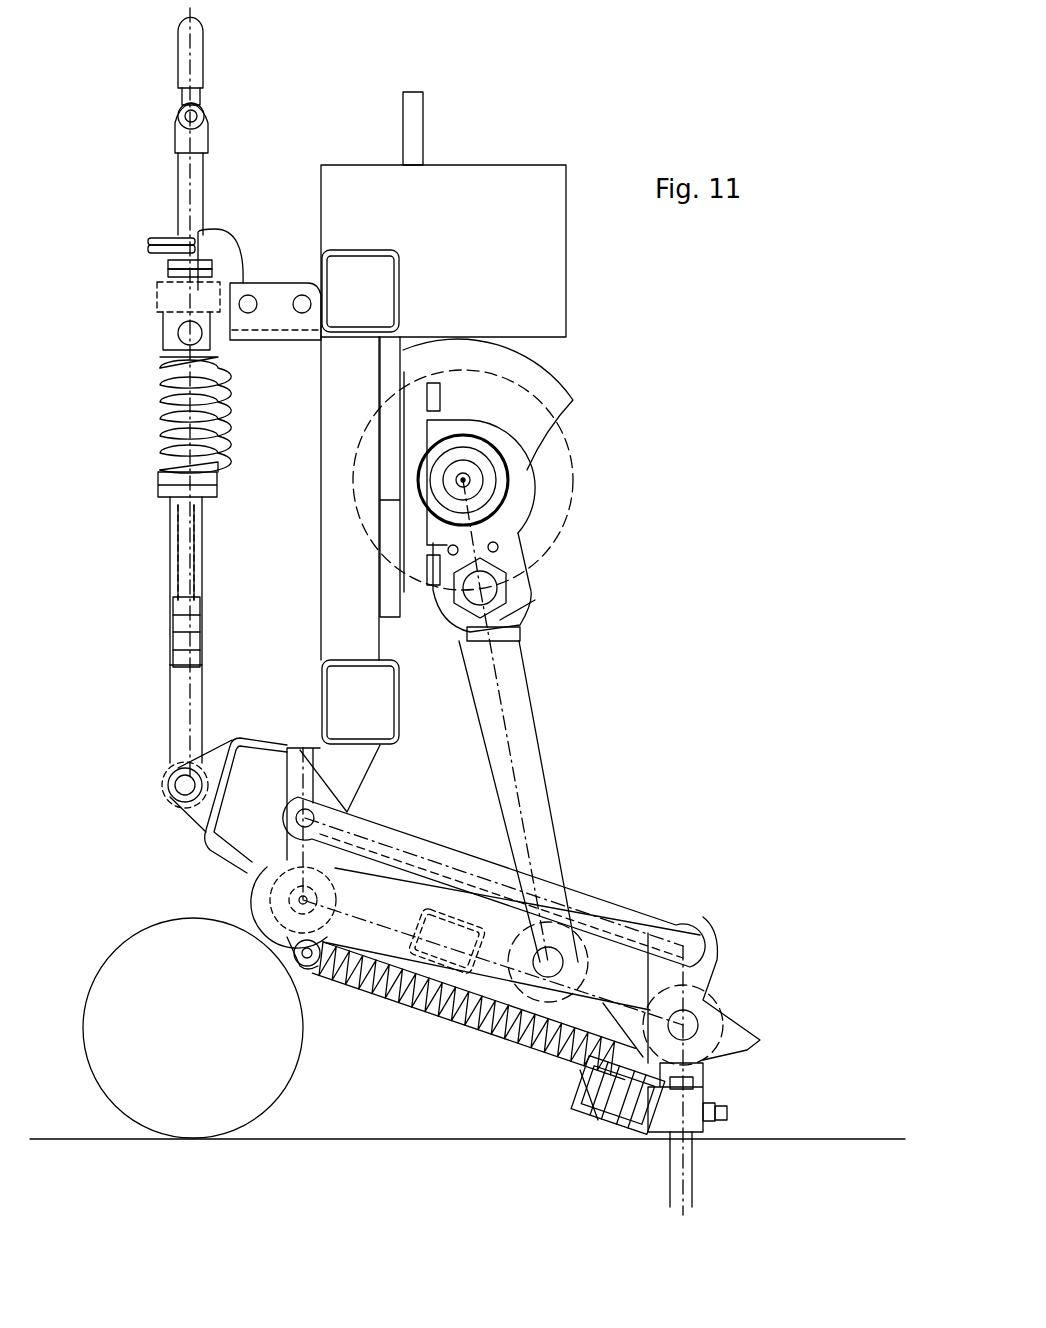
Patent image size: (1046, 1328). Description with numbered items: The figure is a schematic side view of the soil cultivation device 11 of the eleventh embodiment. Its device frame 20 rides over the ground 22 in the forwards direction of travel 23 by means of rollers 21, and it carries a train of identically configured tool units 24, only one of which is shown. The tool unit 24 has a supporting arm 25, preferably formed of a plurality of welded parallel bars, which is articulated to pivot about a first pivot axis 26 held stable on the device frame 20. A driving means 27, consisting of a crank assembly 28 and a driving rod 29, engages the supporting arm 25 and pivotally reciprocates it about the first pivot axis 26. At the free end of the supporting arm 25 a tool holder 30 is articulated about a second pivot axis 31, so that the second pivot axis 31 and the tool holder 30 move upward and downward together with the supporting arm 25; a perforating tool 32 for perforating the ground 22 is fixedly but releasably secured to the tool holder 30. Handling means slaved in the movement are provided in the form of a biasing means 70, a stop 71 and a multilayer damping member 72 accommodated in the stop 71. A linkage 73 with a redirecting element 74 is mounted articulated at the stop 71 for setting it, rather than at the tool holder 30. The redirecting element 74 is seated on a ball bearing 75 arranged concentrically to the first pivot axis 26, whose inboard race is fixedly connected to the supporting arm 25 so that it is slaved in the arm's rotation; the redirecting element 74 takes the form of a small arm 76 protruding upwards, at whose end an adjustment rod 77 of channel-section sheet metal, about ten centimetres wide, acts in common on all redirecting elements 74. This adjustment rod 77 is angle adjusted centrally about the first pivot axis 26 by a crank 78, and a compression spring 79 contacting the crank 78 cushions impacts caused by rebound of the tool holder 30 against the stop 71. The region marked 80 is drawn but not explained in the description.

The soil cultivation device 11 is at (622, 522).
The device frame 20 is at (321, 566).
The rollers 21 is at (266, 1100).
The ground 22 is at (464, 1154).
The forwards direction of travel 23 is at (792, 660).
The tool unit 24 is at (622, 886).
The supporting arm 25 is at (370, 942).
The first pivot axis 26 is at (298, 908).
The driving means 27 is at (550, 574).
The crank assembly 28 is at (552, 404).
The driving rod 29 is at (535, 762).
The tool holder 30 is at (705, 1080).
The second pivot axis 31 is at (697, 1018).
The perforating tool 32 is at (692, 1185).
The biasing means 70 is at (473, 1028).
The stop 71 is at (626, 1136).
The multilayer damping member 72 is at (606, 1114).
The linkage 73 is at (420, 832).
The redirecting element 74 is at (270, 775).
The ball bearing 75 is at (282, 907).
The small arm 76 is at (278, 840).
The adjustment rod 77 is at (235, 742).
The crank 78 is at (215, 176).
The compression spring 79 is at (162, 430).
The link pivot 80 is at (672, 830).